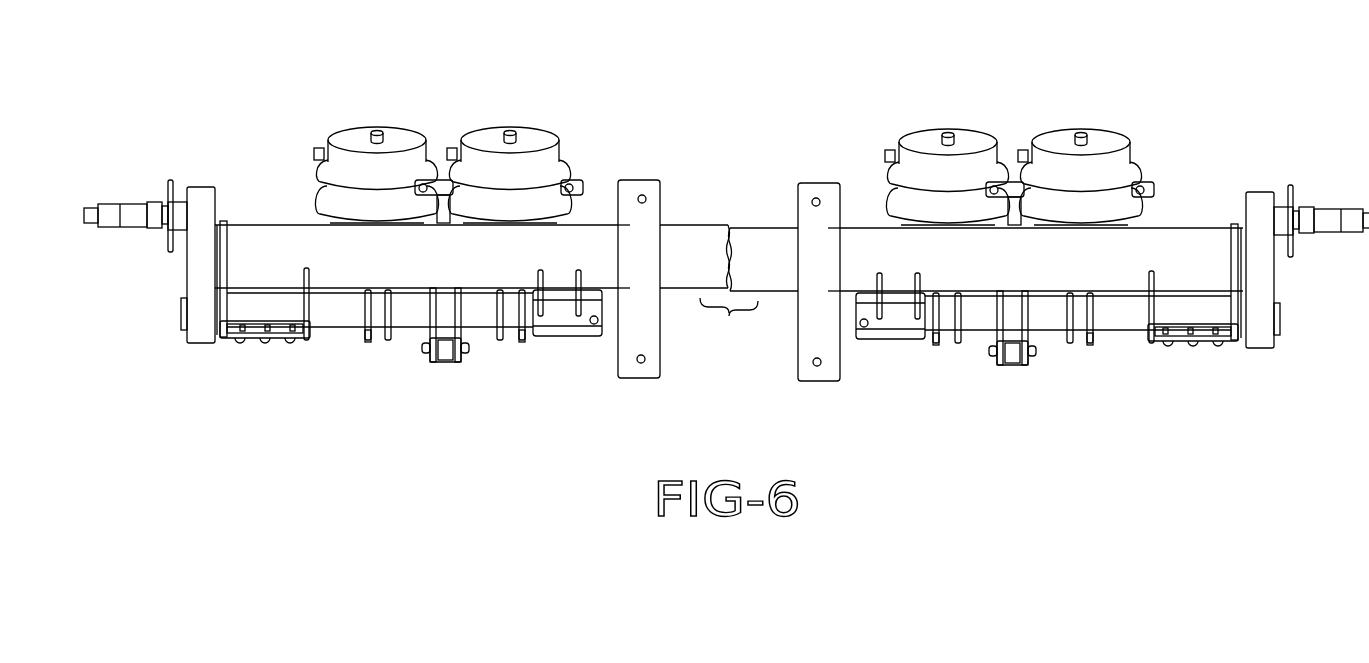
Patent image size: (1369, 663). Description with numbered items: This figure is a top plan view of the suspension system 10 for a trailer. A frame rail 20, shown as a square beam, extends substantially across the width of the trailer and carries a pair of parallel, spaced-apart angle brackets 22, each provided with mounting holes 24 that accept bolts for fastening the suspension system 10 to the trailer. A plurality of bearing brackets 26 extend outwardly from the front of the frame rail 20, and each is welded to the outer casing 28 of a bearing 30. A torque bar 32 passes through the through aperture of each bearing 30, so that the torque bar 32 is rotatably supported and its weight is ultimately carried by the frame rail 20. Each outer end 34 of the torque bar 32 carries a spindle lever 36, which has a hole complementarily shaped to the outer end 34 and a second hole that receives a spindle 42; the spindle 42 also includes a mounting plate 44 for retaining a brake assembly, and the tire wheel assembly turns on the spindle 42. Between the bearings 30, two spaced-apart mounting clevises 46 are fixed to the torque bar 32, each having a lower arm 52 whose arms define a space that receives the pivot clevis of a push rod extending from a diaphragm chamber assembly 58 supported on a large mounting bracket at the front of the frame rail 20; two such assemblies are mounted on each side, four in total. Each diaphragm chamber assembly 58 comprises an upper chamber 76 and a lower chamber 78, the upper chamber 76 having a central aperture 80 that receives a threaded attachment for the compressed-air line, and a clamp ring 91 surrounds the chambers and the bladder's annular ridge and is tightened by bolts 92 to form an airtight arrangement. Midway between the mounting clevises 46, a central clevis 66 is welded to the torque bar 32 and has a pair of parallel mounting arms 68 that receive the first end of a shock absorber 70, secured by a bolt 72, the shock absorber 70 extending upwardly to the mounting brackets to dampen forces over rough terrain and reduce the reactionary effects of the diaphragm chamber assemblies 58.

The suspension system 10 is at (886, 70).
The frame rail 20 is at (716, 238).
The angle brackets 22 is at (642, 188).
The mounting holes 24 is at (646, 199).
The bearing brackets 26 is at (227, 245).
The outer casing 28 is at (275, 345).
The bearing 30 is at (262, 298).
The torque bar 32 is at (341, 296).
The outer end 34 is at (181, 311).
The spindle lever 36 is at (202, 195).
The spindle 42 is at (128, 210).
The mounting plate 44 is at (171, 190).
The mounting clevis 46 is at (366, 352).
The lower arm 52 is at (392, 310).
The diaphragm chamber assembly 58 is at (356, 124).
The central clevis 66 is at (429, 368).
The mounting arms 68 is at (430, 305).
The shock absorber 70 is at (444, 365).
The bolt 72 is at (464, 353).
The upper chamber 76 is at (422, 160).
The lower chamber 78 is at (328, 205).
The central aperture 80 is at (379, 131).
The clamp ring 91 is at (314, 160).
The bolts 92 is at (575, 180).